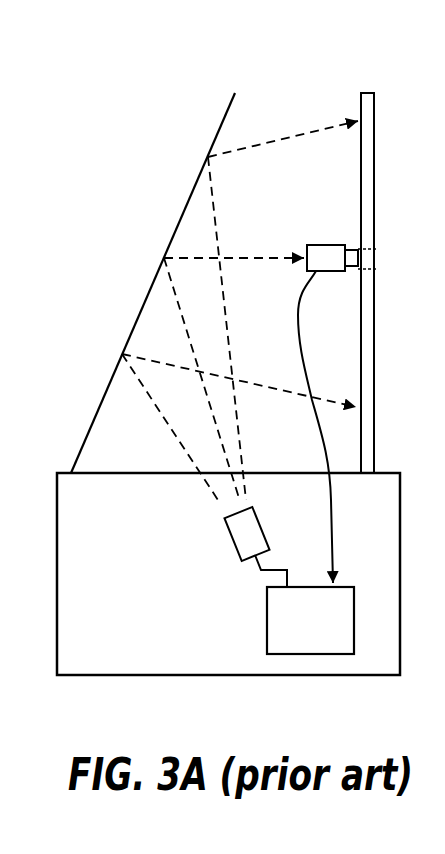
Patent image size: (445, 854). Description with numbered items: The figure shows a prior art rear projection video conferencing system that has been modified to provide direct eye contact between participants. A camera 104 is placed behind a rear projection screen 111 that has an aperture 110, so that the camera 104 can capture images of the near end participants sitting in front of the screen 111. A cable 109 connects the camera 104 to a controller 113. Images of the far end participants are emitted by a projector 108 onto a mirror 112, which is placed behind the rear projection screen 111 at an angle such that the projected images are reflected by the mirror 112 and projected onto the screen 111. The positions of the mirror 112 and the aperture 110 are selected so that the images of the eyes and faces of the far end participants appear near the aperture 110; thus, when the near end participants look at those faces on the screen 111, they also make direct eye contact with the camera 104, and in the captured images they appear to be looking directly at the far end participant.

The camera 104 is at (335, 245).
The projector 108 is at (228, 530).
The cable 109 is at (304, 298).
The aperture 110 is at (383, 260).
The rear projection screen 111 is at (374, 107).
The mirror 112 is at (223, 118).
The controller 113 is at (266, 605).